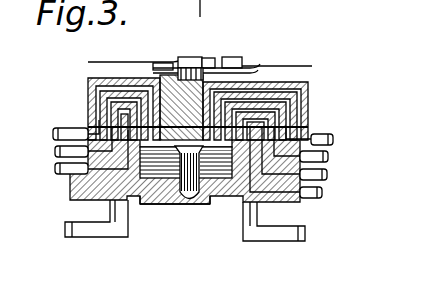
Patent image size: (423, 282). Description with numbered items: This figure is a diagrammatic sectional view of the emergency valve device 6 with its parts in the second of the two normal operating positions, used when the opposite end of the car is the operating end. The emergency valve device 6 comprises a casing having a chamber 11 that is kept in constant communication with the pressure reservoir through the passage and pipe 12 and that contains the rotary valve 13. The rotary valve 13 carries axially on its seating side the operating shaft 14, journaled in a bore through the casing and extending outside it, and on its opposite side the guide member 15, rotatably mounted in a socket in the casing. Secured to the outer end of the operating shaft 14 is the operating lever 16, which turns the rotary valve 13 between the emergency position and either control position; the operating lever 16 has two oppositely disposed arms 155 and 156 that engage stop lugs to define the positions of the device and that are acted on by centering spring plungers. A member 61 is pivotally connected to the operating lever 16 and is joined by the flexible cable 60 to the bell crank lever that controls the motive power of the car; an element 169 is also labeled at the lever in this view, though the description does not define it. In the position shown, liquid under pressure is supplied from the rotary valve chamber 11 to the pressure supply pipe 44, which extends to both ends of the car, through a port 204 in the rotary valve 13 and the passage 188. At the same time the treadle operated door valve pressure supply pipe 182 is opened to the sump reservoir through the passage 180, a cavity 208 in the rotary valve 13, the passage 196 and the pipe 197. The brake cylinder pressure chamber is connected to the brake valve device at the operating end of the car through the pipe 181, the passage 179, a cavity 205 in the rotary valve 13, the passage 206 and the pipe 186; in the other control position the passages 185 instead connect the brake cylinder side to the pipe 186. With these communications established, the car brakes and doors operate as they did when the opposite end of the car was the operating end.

The flexible cable 60 is at (108, 62).
The arm 155 is at (147, 62).
The operating lever 16 is at (218, 62).
The connector lead 169 is at (210, 60).
The member 61 is at (245, 61).
The arm 156 is at (258, 66).
The operating shaft 14 is at (247, 72).
The passage 196 is at (92, 84).
The passages 185 is at (110, 107).
The passage 180 is at (310, 94).
The passage 179 is at (308, 112).
The rotary valve 13 is at (272, 202).
The cavity 208 is at (186, 155).
The passage 188 is at (120, 195).
The passage 206 is at (314, 128).
The pipe 197 is at (53, 134).
The pipe 186 is at (56, 151).
The pressure supply pipe 44 is at (56, 169).
The pipe 182 is at (335, 139).
The pipe 181 is at (330, 156).
The passage and pipe 12 is at (324, 192).
The port 204 is at (147, 172).
The cavity 205 is at (222, 172).
The chamber 11 is at (180, 184).
The guide member 15 is at (185, 205).
The emergency valve device 6 is at (198, 208).